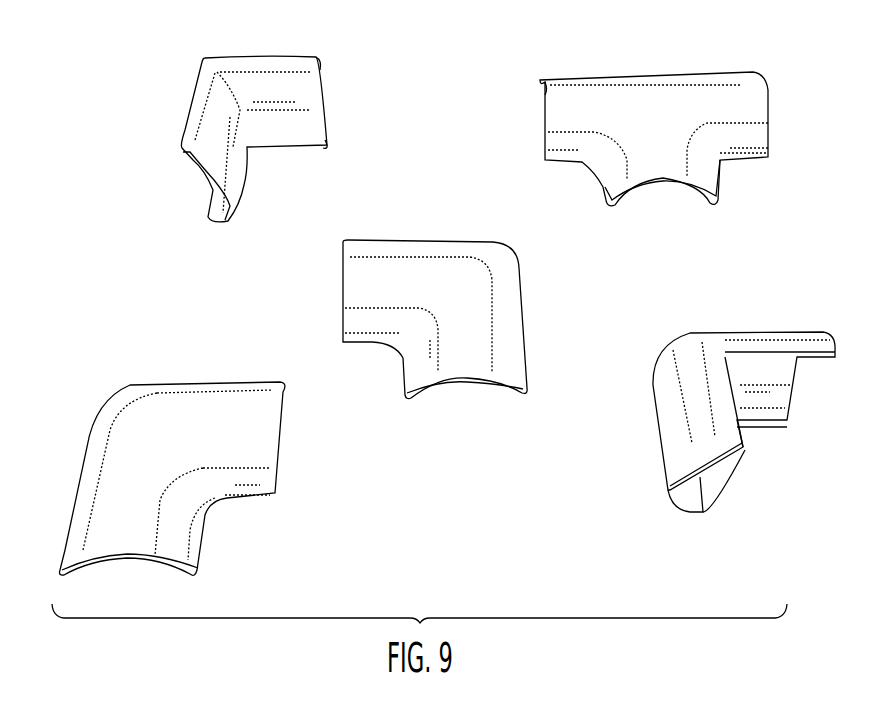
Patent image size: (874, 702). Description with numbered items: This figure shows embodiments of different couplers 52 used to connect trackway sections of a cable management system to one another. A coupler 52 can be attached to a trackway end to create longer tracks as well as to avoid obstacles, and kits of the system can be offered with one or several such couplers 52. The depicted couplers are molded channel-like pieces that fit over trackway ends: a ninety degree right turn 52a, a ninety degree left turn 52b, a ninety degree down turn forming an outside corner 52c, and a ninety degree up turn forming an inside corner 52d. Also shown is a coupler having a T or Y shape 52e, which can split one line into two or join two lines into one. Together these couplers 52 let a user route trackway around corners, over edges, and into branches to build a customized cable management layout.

The coupler 52 is at (98, 67).
The 90° right turn coupler 52a is at (203, 530).
The 90° left turn coupler 52b is at (375, 342).
The 90° down turn (outside corner) coupler 52c is at (710, 453).
The 90° up turn (inside corner) coupler 52d is at (263, 150).
The T or Y shape coupler 52e is at (582, 167).